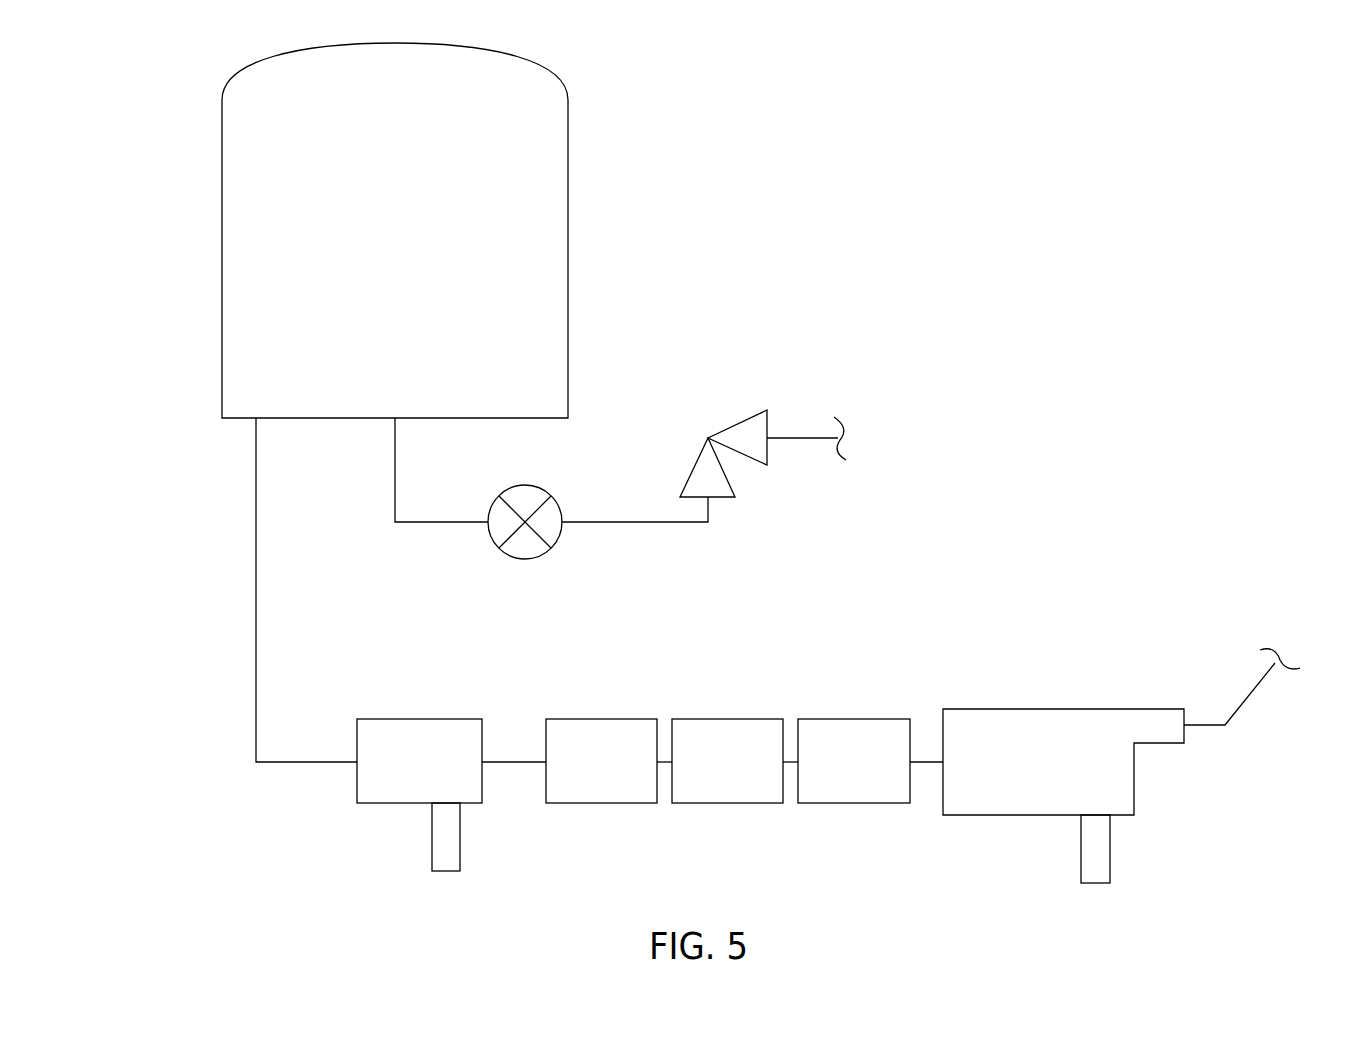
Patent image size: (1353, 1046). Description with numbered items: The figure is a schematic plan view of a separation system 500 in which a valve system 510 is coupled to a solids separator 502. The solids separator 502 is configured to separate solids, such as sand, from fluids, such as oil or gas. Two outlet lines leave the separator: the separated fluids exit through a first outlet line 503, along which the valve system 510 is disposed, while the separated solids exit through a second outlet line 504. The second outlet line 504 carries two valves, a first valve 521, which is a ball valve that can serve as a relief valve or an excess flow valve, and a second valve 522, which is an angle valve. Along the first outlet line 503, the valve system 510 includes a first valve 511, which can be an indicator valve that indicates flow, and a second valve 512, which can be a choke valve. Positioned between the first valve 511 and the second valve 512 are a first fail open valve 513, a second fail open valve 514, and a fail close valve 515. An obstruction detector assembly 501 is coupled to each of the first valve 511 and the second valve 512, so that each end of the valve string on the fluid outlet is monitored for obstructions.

The separation system 500 is at (930, 108).
The obstruction detector assembly 501 is at (435, 890).
The solids separator 502 is at (569, 145).
The first outlet line 503 is at (256, 483).
The second outlet line 504 is at (398, 461).
The valve system 510 is at (300, 820).
The first valve 511 is at (385, 805).
The second valve 512 is at (1016, 707).
The first fail open valve 513 is at (597, 805).
The second fail open valve 514 is at (730, 805).
The fail close valve 515 is at (877, 805).
The first valve 521 is at (540, 485).
The second valve 522 is at (738, 420).